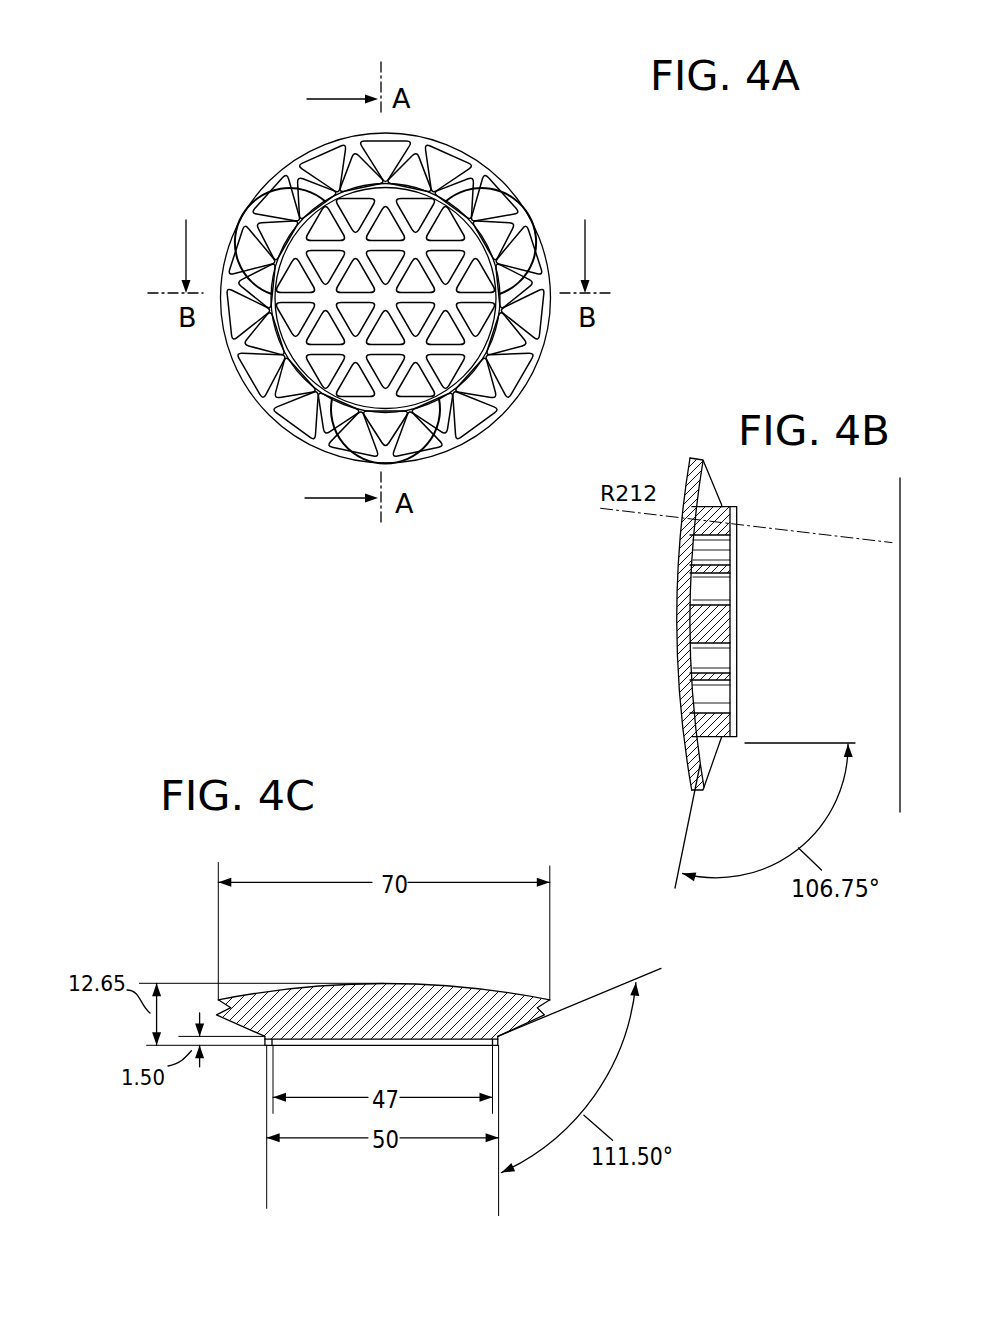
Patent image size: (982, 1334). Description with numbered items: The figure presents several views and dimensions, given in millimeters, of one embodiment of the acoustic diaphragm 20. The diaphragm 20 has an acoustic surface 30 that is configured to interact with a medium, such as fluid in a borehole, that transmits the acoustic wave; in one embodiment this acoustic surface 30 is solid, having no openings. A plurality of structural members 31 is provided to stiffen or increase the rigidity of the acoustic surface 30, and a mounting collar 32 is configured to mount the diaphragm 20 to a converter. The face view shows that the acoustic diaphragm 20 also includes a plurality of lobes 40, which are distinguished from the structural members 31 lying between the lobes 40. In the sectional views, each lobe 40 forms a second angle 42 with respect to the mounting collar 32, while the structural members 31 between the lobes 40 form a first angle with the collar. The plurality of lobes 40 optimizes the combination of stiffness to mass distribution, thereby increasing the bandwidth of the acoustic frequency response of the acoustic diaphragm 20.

In FIG. 4A, the acoustic diaphragm 20 is at (247, 137).
In FIG. 4B, the acoustic surface 30 is at (682, 664).
In FIG. 4C, the acoustic surface 30 is at (315, 984).
In FIG. 4A, the structural members 31 is at (427, 348).
In FIG. 4B, the structural members 31 is at (692, 570).
In FIG. 4A, the mounting collar 32 is at (288, 357).
In FIG. 4A, the lobes 40 is at (236, 250).
In FIG. 4B, the lobes 40 is at (706, 752).
In FIG. 4C, the second angle 42 is at (602, 1085).